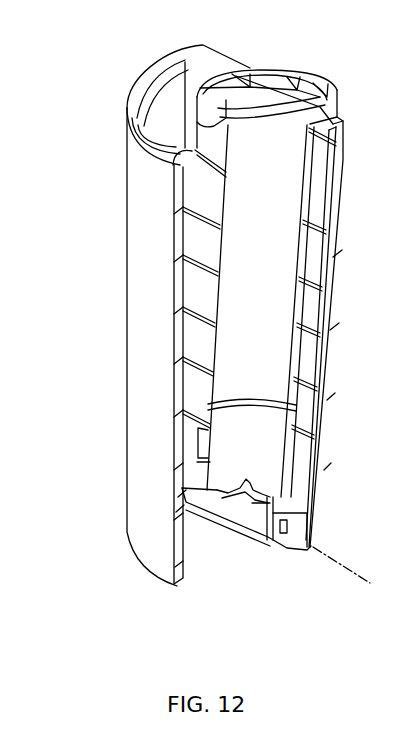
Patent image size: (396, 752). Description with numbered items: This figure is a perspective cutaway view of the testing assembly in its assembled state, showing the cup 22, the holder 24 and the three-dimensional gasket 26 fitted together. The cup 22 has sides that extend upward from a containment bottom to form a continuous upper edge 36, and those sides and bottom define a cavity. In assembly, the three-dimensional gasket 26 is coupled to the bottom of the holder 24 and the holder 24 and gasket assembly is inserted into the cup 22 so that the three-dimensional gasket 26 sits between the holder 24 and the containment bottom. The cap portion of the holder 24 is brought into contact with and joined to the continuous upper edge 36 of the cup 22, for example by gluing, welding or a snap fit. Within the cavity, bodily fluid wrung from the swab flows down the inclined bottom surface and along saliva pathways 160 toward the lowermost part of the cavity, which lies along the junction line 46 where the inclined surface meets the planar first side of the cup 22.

The cup 22 is at (117, 180).
The holder 24 is at (128, 94).
The continuous upper edge 36 is at (133, 147).
The three-dimensional gasket 26 is at (181, 473).
The saliva pathways 160 is at (263, 488).
The junction line 46 is at (347, 571).